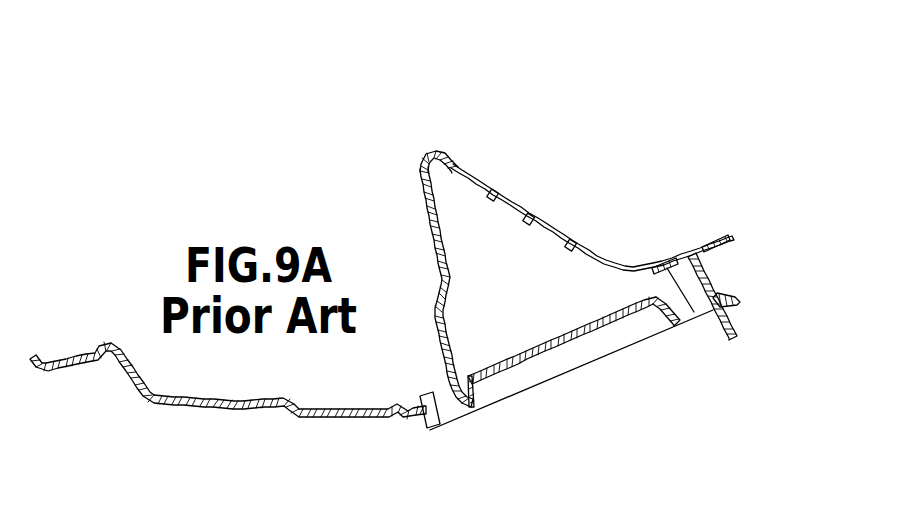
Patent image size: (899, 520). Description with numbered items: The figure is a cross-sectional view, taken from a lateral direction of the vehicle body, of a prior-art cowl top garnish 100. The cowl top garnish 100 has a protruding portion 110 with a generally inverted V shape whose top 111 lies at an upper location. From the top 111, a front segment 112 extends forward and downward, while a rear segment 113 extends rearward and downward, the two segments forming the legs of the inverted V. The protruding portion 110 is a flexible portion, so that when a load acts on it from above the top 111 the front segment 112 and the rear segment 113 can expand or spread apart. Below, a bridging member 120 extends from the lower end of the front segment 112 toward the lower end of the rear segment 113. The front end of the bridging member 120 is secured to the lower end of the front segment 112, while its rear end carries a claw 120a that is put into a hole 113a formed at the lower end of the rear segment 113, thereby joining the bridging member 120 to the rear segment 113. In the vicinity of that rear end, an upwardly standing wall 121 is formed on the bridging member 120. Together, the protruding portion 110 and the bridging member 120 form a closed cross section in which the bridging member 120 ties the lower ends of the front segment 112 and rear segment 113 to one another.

The cowl top garnish 100 is at (612, 133).
The protruding portion 110 is at (525, 91).
The top 111 is at (435, 150).
The front segment 112 is at (423, 200).
The rear segment 113 is at (492, 200).
The hole 113a is at (717, 314).
The bridging member 120 is at (580, 367).
The upwardly standing wall 121 is at (660, 323).
The claw 120a is at (728, 293).